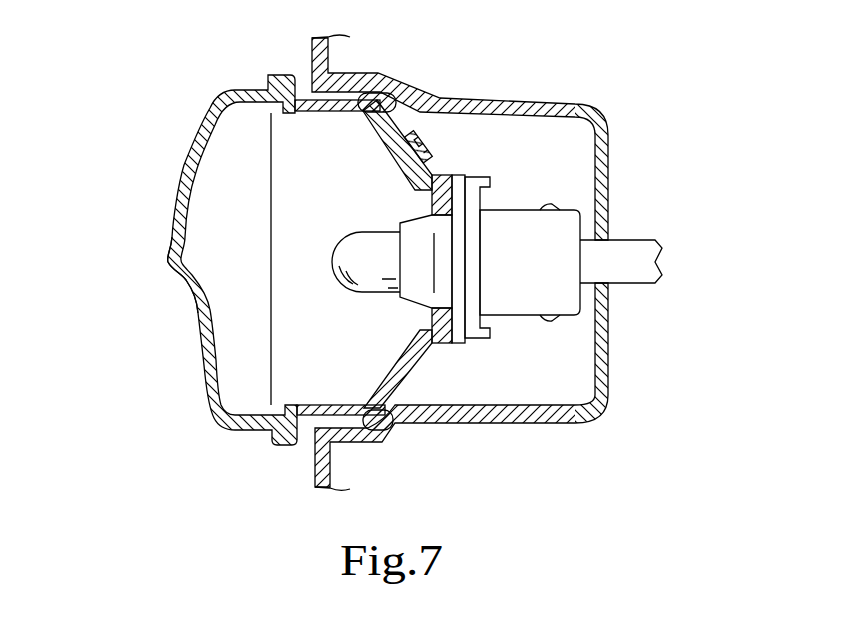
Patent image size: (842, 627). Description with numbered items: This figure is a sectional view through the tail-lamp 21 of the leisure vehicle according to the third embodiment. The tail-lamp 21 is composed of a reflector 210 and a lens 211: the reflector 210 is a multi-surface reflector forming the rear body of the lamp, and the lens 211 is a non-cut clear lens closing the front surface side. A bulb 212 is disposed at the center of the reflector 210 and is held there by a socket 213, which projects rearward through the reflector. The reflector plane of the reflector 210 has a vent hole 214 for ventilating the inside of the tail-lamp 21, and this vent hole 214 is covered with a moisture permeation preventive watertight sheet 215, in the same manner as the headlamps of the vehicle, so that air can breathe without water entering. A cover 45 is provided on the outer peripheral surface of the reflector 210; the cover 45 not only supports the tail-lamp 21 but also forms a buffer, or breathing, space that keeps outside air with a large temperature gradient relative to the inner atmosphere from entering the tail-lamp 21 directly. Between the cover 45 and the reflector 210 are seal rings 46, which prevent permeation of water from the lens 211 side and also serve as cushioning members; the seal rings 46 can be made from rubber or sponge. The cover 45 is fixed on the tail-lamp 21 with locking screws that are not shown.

The tail-lamp 21 is at (178, 188).
The lens 211 is at (192, 298).
The reflector 210 is at (358, 174).
The bulb 212 is at (358, 292).
The socket 213 is at (418, 296).
The vent hole 214 is at (398, 152).
The moisture permeation preventive watertight sheet 215 is at (428, 152).
The cover 45 is at (574, 106).
The seal rings 46 is at (378, 88).